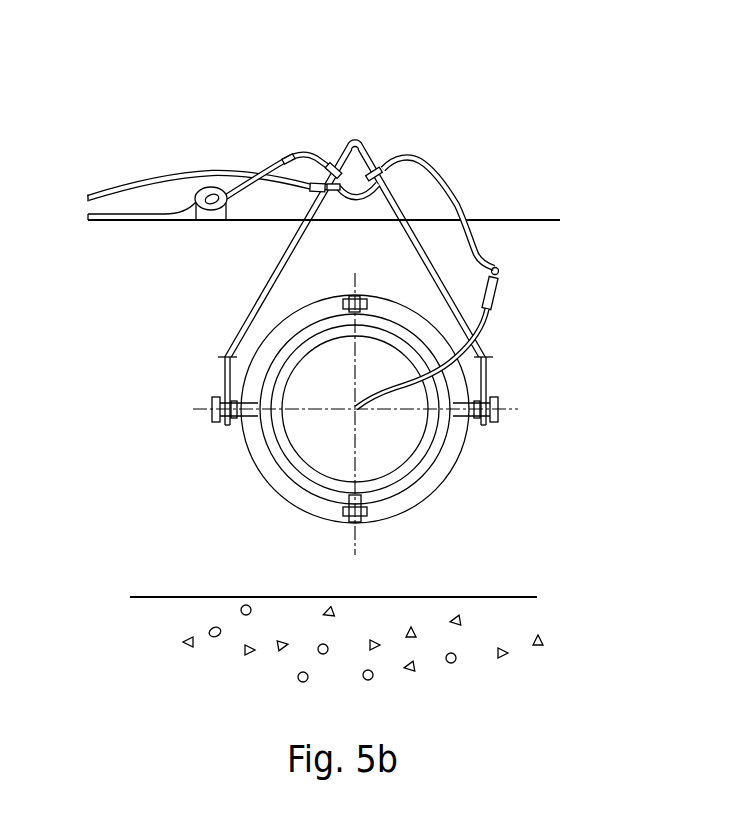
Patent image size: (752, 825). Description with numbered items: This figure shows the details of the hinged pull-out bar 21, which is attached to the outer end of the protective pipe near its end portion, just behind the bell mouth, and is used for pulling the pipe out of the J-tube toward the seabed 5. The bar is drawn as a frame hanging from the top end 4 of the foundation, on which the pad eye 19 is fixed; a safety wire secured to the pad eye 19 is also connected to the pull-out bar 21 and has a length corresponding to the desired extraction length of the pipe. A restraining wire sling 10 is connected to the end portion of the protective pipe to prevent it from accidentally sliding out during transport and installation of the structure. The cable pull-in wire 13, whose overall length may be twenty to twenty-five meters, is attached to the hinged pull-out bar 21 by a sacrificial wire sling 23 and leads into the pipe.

The top end 4 is at (543, 218).
The seabed 5 is at (172, 597).
The restraining wire sling 10 is at (110, 186).
The cable pull-in wire 13 is at (400, 387).
The pad eye 19 is at (205, 192).
The hinged pull-out bar 21 is at (278, 263).
The sacrificial wire sling 23 is at (480, 256).